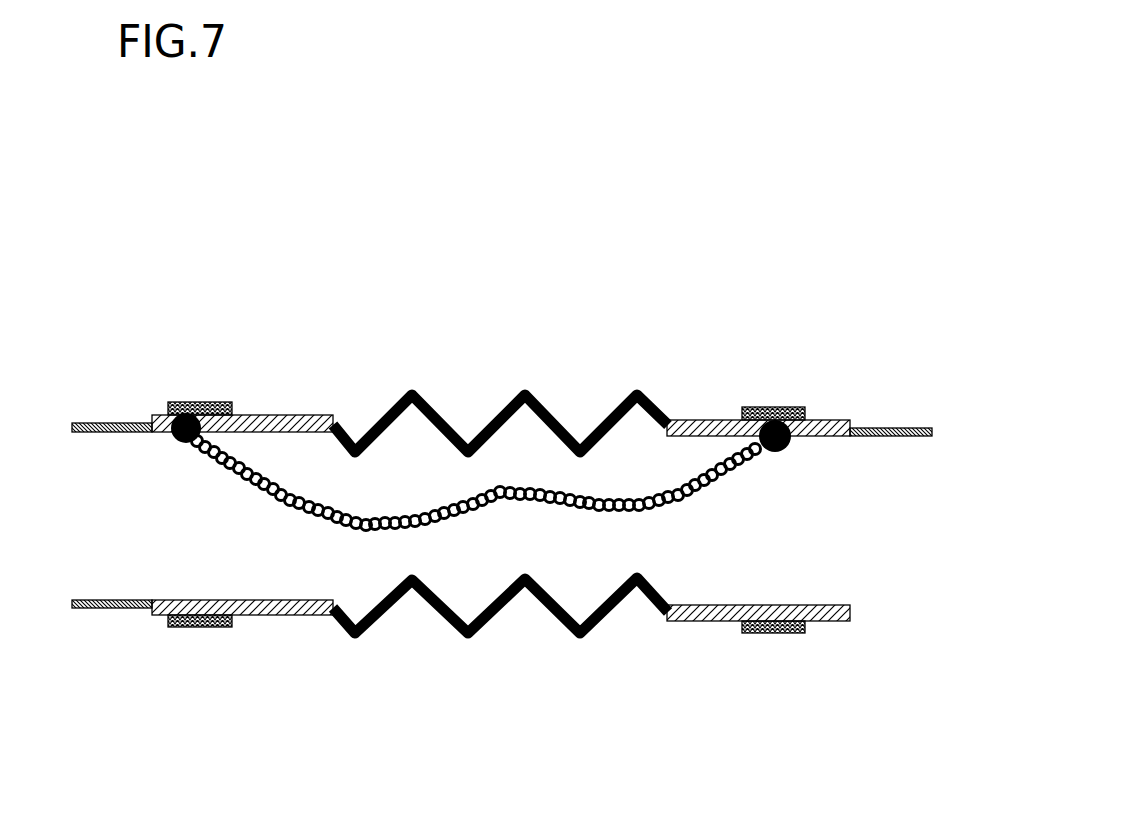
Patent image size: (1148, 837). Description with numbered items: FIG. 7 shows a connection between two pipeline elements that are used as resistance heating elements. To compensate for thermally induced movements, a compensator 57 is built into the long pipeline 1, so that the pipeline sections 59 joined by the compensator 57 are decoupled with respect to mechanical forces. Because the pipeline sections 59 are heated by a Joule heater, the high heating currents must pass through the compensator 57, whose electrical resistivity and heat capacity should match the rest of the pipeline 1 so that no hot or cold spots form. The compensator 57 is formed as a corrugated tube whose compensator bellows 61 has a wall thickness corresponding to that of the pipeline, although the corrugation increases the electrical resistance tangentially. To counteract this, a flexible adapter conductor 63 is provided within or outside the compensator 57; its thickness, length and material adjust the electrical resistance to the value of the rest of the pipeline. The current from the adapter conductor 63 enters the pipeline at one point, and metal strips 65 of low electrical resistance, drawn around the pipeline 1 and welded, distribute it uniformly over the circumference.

The pipeline 1 is at (116, 402).
The compensator 57 is at (522, 394).
The pipeline section 59 is at (862, 420).
The compensator bellows 61 is at (467, 640).
The adapter conductor 63 is at (280, 478).
The metal strip 65 is at (207, 628).